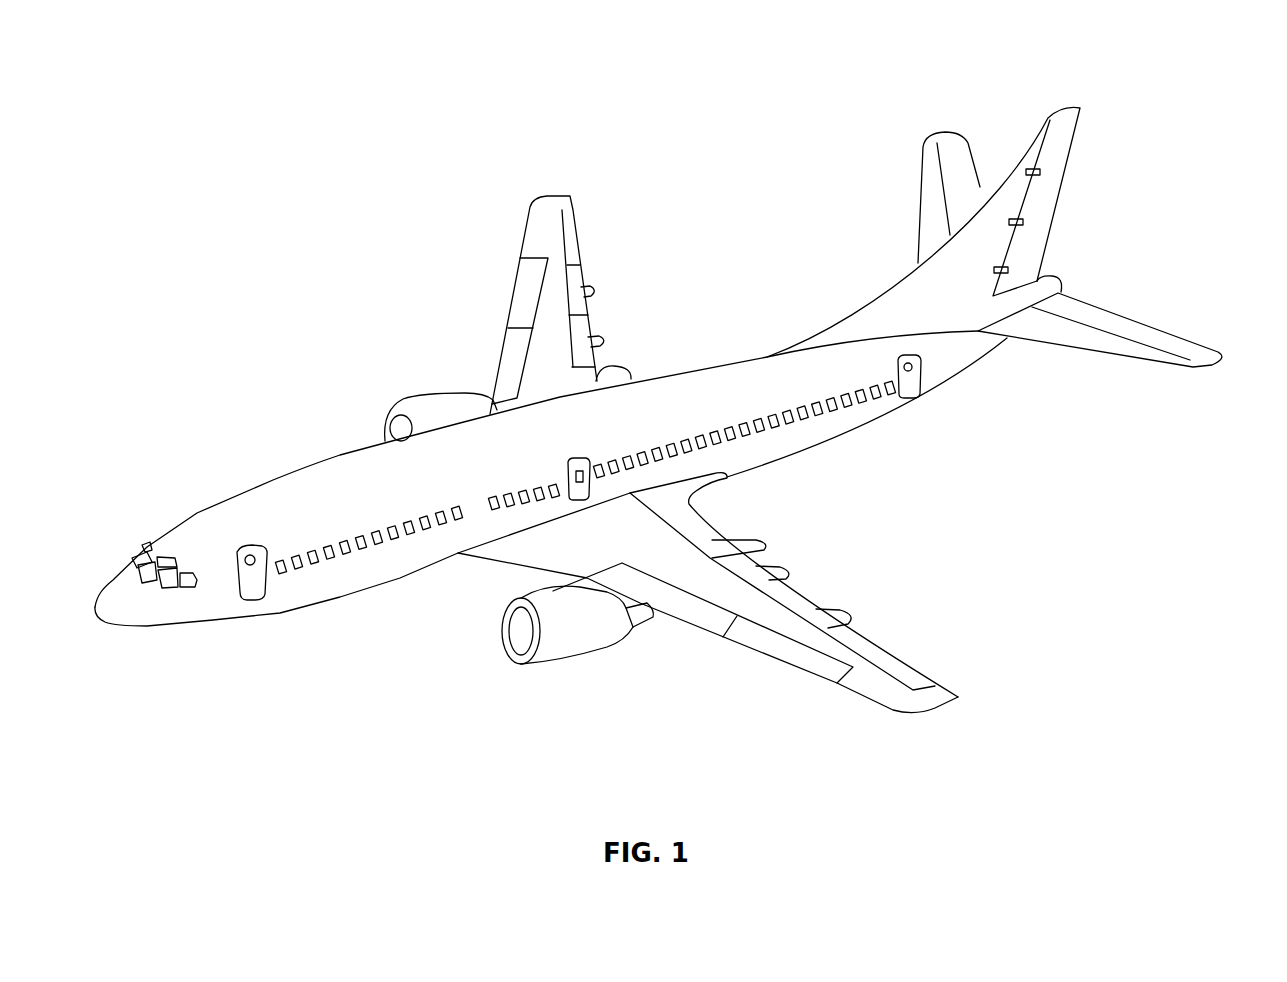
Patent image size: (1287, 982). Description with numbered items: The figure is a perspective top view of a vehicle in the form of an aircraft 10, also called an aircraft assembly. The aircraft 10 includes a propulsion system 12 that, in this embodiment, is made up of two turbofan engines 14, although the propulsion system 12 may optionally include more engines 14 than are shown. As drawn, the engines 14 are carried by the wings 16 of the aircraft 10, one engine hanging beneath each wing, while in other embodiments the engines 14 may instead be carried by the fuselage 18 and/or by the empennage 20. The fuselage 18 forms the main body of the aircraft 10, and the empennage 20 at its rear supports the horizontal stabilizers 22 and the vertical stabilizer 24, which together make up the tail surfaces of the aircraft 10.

The aircraft 10 is at (355, 172).
The propulsion system 12 is at (477, 714).
The turbofan engines 14 is at (429, 400).
The wings 16 is at (553, 202).
The fuselage 18 is at (327, 578).
The empennage 20 is at (811, 303).
The horizontal stabilizers 22 is at (952, 143).
The vertical stabilizer 24 is at (1043, 121).